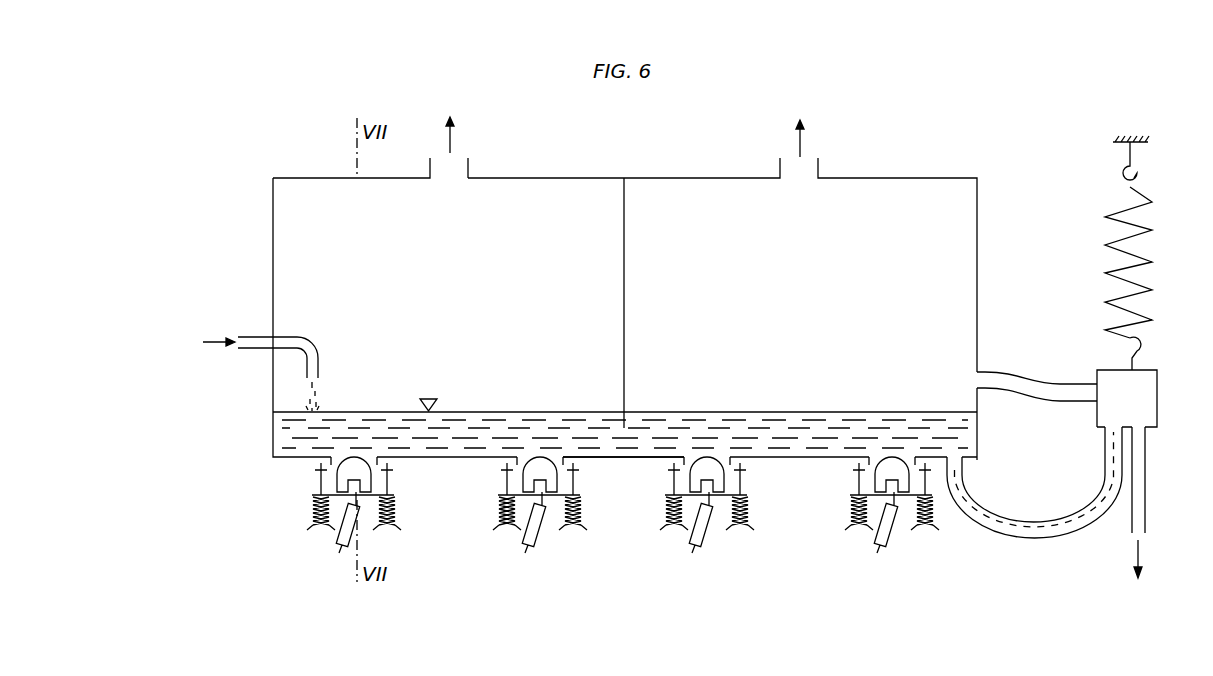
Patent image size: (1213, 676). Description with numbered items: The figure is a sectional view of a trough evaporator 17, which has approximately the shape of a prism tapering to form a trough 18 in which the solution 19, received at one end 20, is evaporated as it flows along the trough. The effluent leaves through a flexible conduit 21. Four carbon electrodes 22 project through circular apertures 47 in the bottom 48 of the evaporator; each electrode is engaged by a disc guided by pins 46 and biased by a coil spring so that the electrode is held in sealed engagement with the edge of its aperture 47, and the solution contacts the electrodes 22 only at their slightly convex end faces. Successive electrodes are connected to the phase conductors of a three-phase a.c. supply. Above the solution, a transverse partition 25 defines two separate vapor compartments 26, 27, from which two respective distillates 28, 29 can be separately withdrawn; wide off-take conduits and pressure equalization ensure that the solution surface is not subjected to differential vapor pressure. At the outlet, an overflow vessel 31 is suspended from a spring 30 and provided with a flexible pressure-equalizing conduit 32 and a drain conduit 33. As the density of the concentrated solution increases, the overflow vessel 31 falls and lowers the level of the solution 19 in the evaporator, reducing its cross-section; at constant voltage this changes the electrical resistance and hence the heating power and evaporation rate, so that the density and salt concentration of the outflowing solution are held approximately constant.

The evaporator 17 is at (303, 177).
The trough 18 is at (272, 427).
The solution 19 is at (805, 435).
The end 20 is at (243, 335).
The flexible conduit 21 is at (1028, 522).
The carbon electrode 22 is at (338, 478).
The transverse partition 25 is at (624, 252).
The vapor compartment 26 is at (514, 216).
The vapor compartment 27 is at (835, 245).
The distillate 28 is at (451, 120).
The distillate 29 is at (802, 123).
The spring 30 is at (1148, 260).
The overflow vessel 31 is at (1140, 400).
The flexible pressure-equalizing conduit 32 is at (1047, 390).
The drain conduit 33 is at (1140, 490).
The pin 46 is at (388, 481).
The circular aperture 47 is at (373, 457).
The bottom 48 is at (628, 458).